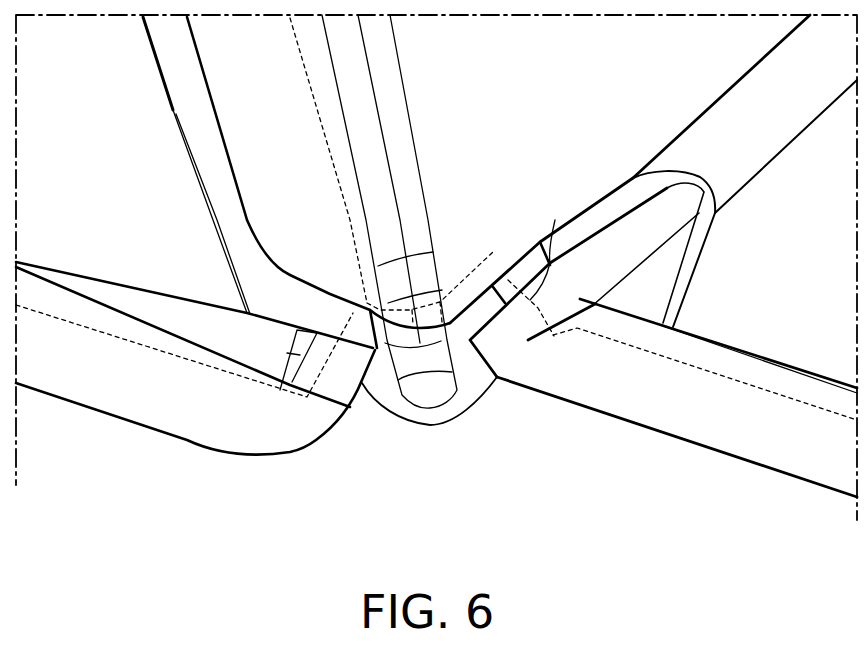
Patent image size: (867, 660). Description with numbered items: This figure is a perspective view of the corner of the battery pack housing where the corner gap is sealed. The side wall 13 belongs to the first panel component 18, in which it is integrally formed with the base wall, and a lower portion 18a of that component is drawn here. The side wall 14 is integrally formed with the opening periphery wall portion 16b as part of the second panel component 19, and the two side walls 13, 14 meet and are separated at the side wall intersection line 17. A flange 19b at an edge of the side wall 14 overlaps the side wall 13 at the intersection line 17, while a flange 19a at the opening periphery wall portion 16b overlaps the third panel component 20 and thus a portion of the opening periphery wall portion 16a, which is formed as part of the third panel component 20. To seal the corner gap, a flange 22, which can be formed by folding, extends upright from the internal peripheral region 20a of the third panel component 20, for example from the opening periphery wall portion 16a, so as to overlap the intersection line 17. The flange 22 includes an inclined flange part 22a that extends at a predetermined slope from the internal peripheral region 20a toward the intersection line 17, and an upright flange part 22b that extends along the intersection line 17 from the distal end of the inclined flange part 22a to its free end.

The side wall 13 is at (254, 182).
The side wall 14 is at (514, 52).
The opening periphery wall portion 16a is at (439, 445).
The opening periphery wall portion 16b is at (824, 284).
The side wall intersection line 17 is at (385, 143).
The first panel component 18 is at (124, 171).
The side member lower portion 18a is at (112, 416).
The second panel component 19 is at (546, 64).
The flange 19a is at (667, 415).
The flange 19b is at (210, 214).
The third panel component 20 is at (512, 512).
The internal peripheral region 20a is at (207, 367).
The flange 22 is at (489, 246).
The inclined flange part 22a is at (555, 220).
The upright flange part 22b is at (510, 268).